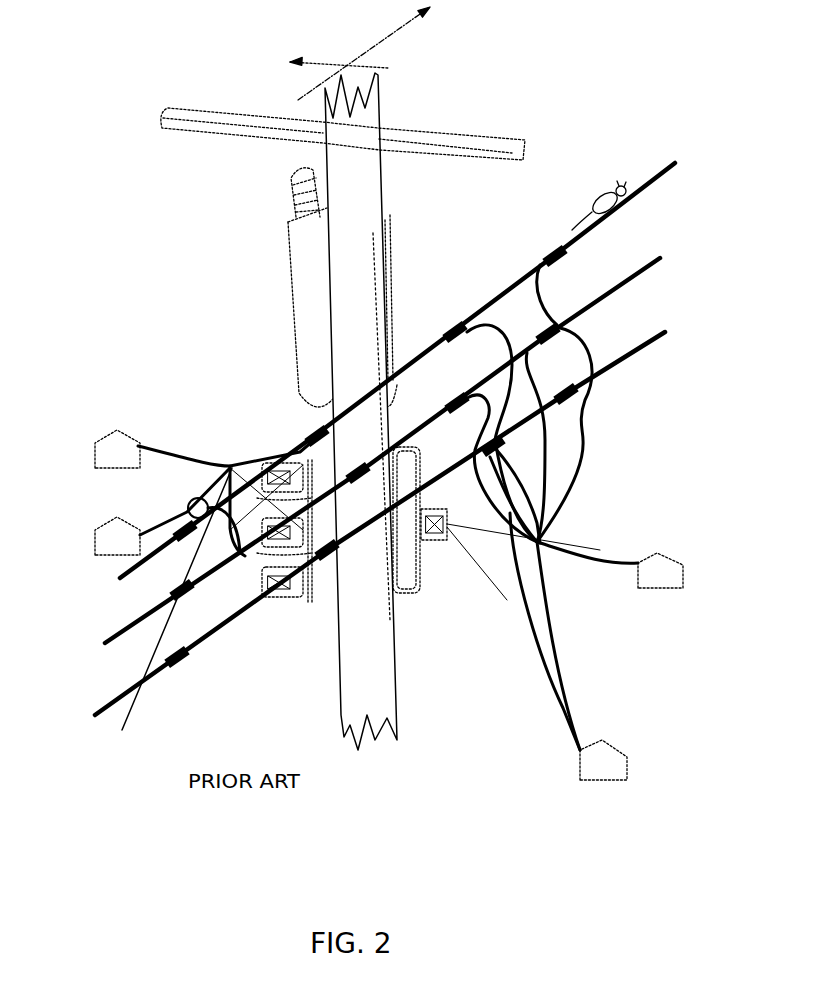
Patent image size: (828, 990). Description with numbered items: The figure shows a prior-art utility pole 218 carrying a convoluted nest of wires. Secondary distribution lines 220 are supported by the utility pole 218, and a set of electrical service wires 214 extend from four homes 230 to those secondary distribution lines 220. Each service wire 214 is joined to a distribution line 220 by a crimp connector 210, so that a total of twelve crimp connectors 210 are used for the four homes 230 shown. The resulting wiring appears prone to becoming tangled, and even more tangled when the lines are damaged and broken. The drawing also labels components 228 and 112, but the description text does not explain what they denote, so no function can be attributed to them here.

The crimp connector 210 is at (455, 325).
The utility pole 218 is at (432, 135).
The secondary distribution line 220 is at (662, 168).
The fuse cutout 228 is at (265, 460).
The electrical service wire 214 is at (168, 452).
The home 230 is at (100, 442).
The power line 112 is at (222, 625).